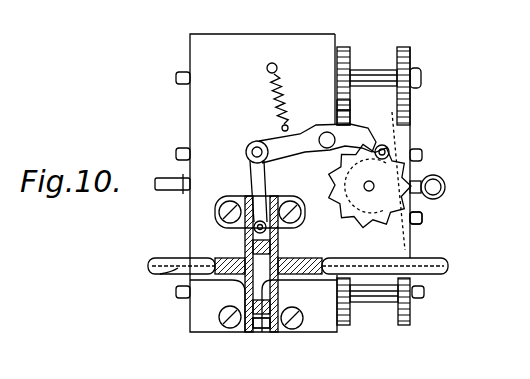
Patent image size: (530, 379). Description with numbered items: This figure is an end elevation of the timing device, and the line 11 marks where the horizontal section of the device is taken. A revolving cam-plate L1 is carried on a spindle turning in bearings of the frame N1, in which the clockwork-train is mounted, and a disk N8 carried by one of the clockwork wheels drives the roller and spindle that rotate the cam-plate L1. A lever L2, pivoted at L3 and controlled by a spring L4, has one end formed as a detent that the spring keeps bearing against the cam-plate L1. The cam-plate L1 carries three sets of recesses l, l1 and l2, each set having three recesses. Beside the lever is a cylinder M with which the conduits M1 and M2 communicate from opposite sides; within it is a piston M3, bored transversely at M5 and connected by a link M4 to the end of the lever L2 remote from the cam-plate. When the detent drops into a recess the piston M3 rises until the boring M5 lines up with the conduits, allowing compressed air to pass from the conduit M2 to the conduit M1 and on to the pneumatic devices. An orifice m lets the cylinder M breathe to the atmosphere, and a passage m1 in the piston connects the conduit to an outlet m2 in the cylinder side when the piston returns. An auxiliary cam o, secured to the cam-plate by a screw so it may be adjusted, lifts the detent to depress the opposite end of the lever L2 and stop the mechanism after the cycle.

The section line 11 is at (440, 46).
The disk N8 is at (352, 118).
The frame N1 is at (412, 310).
The spring L4 is at (266, 86).
The link M4 is at (268, 176).
The lever L2 is at (339, 110).
The pivot L3 is at (344, 108).
The recesses l is at (387, 148).
The auxiliary cam o is at (412, 116).
The cam-plate L1 is at (388, 188).
The recesses l1 is at (337, 196).
The recesses l2 is at (422, 220).
The outlet m2 is at (280, 248).
The passage m1 is at (246, 247).
The cylinder M is at (208, 259).
The conduit M1 is at (177, 273).
The conduit M2 is at (410, 262).
The piston M3 is at (318, 290).
The transverse boring M5 is at (243, 298).
The orifice m is at (262, 332).